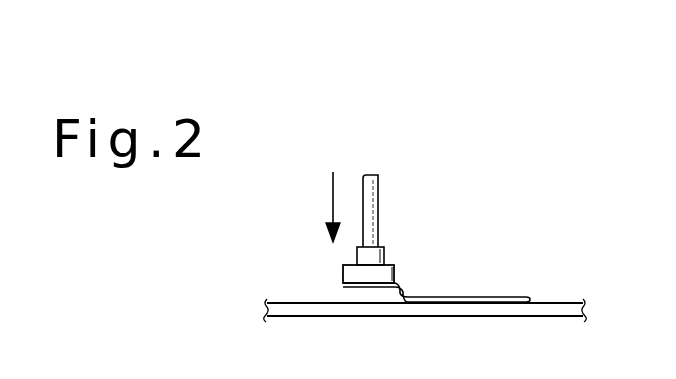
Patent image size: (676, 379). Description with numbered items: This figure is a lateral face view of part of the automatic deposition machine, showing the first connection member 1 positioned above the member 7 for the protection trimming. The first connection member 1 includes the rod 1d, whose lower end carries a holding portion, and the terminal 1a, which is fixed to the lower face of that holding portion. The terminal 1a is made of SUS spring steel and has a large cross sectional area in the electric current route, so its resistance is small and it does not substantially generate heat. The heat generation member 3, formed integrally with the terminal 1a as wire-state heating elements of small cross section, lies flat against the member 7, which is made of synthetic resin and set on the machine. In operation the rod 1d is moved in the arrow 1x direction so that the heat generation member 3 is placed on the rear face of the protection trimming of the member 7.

The first connection member 1 is at (394, 265).
The terminal 1a is at (343, 283).
The rod 1d is at (372, 203).
The arrow direction 1x is at (333, 193).
The heat generation member 3 is at (503, 297).
The member for the protection trimming 7 is at (339, 305).